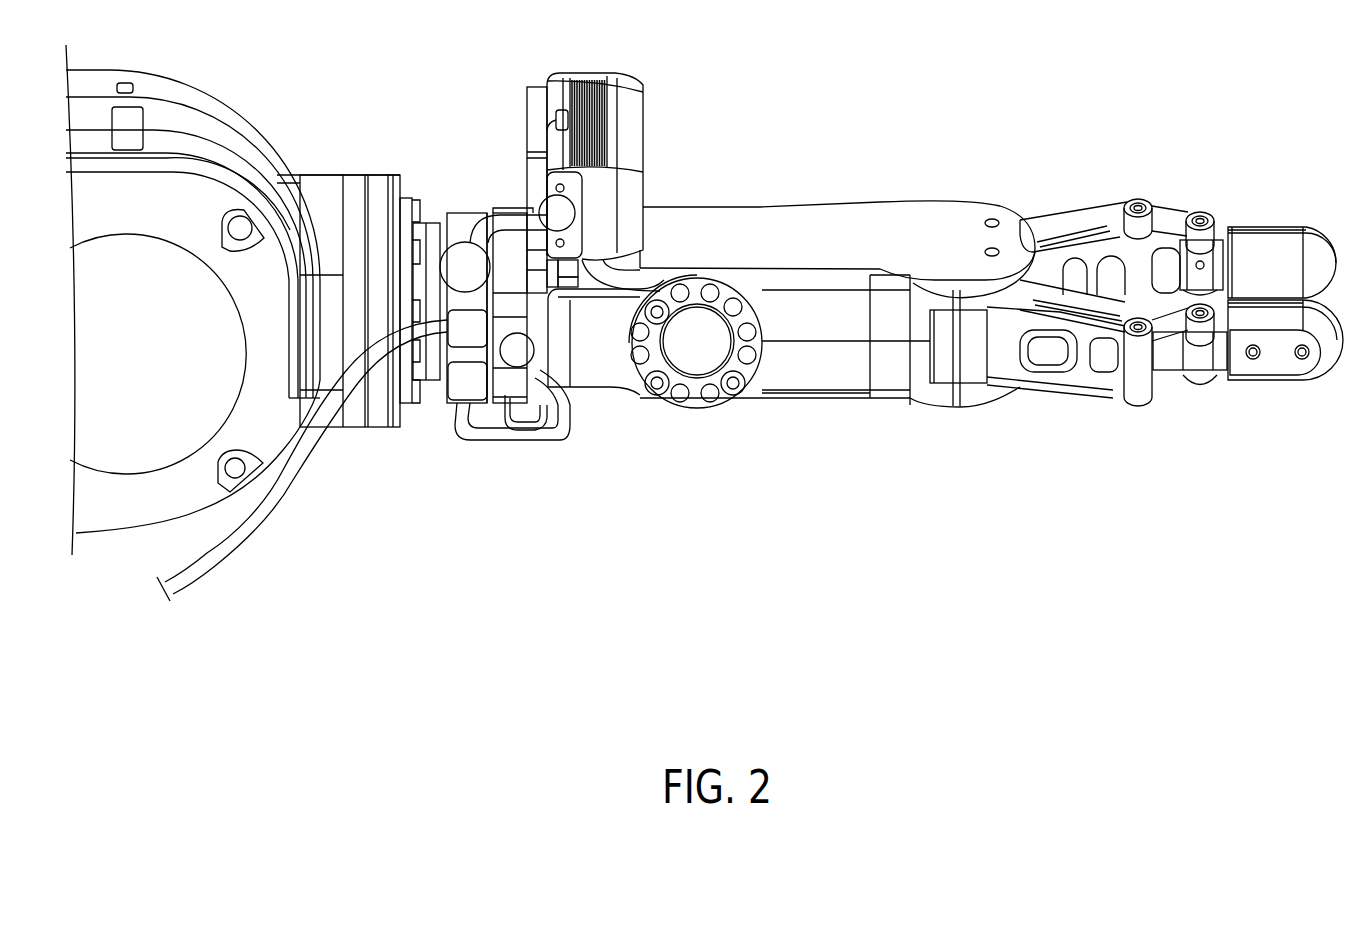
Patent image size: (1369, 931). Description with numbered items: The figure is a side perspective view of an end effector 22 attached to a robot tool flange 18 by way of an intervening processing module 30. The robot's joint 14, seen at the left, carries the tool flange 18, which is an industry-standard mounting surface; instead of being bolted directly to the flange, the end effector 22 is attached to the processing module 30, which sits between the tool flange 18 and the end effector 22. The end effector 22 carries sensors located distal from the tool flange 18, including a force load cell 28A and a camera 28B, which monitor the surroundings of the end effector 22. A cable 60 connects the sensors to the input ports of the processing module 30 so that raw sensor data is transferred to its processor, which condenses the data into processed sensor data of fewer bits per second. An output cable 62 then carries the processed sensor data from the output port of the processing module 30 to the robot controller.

The joint 14 is at (142, 276).
The tool flange 18 is at (437, 222).
The processing module 30 is at (468, 214).
The cable 60 is at (497, 210).
The force load cell 28A is at (510, 398).
The camera 28B is at (613, 77).
The end effector 22 is at (937, 198).
The output cable 62 is at (263, 527).